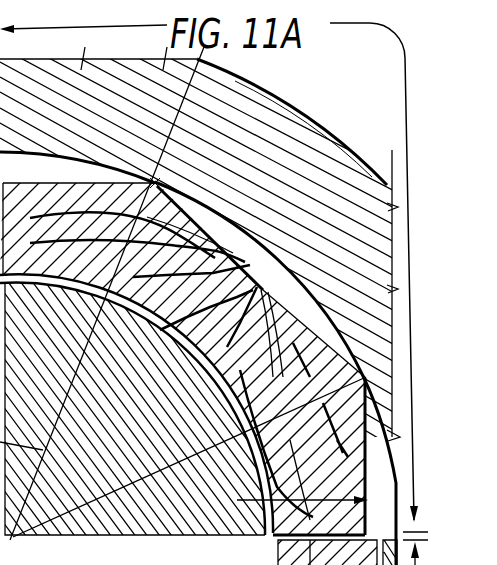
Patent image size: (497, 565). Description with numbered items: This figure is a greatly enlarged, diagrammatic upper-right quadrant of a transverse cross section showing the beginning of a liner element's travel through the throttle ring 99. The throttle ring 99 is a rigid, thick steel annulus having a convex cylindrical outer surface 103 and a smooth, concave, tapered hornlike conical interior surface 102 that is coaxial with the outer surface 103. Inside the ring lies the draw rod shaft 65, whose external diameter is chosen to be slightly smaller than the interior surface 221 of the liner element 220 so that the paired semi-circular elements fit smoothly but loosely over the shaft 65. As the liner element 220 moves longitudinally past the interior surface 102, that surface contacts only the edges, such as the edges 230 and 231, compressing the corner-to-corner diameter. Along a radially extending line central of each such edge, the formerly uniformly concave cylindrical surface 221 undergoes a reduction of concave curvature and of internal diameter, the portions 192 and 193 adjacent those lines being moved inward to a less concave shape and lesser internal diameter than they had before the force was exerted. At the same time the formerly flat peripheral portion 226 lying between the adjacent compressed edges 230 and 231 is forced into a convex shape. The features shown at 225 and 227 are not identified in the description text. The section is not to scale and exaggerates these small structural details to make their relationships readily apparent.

The draw rod shaft 65 is at (128, 430).
The throttle ring 99 is at (297, 104).
The concave tapered hornlike conical interior surface 102 is at (247, 230).
The convex cylindrical outer surface 103 is at (336, 142).
The portion of concave cylindrical surface 192 is at (141, 271).
The portion of concave cylindrical surface 193 is at (247, 380).
The liner element 220 is at (60, 181).
The interior surface 221 is at (136, 404).
The curved surface 225 is at (78, 183).
The peripheral portion 226 is at (274, 287).
The radius dimension 227 is at (282, 501).
The edge 230 is at (156, 181).
The edge 231 is at (391, 374).